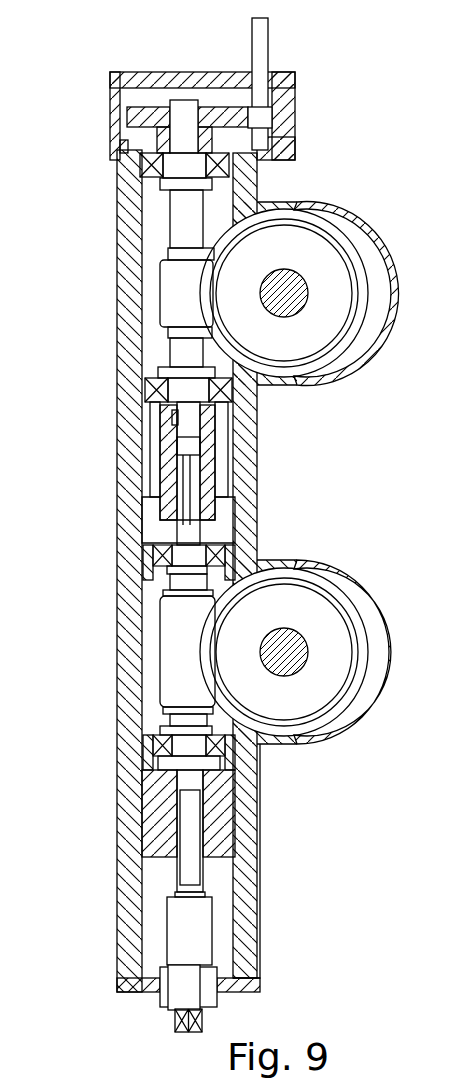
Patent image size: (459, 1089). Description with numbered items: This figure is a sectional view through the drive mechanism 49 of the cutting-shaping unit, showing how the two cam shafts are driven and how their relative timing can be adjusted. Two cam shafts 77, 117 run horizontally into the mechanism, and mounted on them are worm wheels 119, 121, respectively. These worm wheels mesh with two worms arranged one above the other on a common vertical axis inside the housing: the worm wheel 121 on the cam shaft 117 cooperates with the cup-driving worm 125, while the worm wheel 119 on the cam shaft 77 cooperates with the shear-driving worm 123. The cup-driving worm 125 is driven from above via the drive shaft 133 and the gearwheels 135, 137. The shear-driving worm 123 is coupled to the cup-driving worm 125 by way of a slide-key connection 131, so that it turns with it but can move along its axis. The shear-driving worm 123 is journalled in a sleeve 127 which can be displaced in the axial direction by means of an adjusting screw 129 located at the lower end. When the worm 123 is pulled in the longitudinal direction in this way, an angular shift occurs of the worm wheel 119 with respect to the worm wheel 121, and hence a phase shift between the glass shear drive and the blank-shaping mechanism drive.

The drive mechanism 49 is at (164, 532).
The cam shaft 77 is at (295, 628).
The cam shaft 117 is at (286, 268).
The worm wheel 119 is at (304, 700).
The worm wheel 121 is at (301, 347).
The shear-driving worm 123 is at (172, 672).
The cup-driving worm 125 is at (172, 283).
The sleeve 127 is at (140, 618).
The adjusting screw 129 is at (175, 1025).
The slide-key connection 131 is at (160, 440).
The drive shaft 133 is at (268, 33).
The gearwheel 135 is at (273, 118).
The gearwheel 137 is at (150, 107).